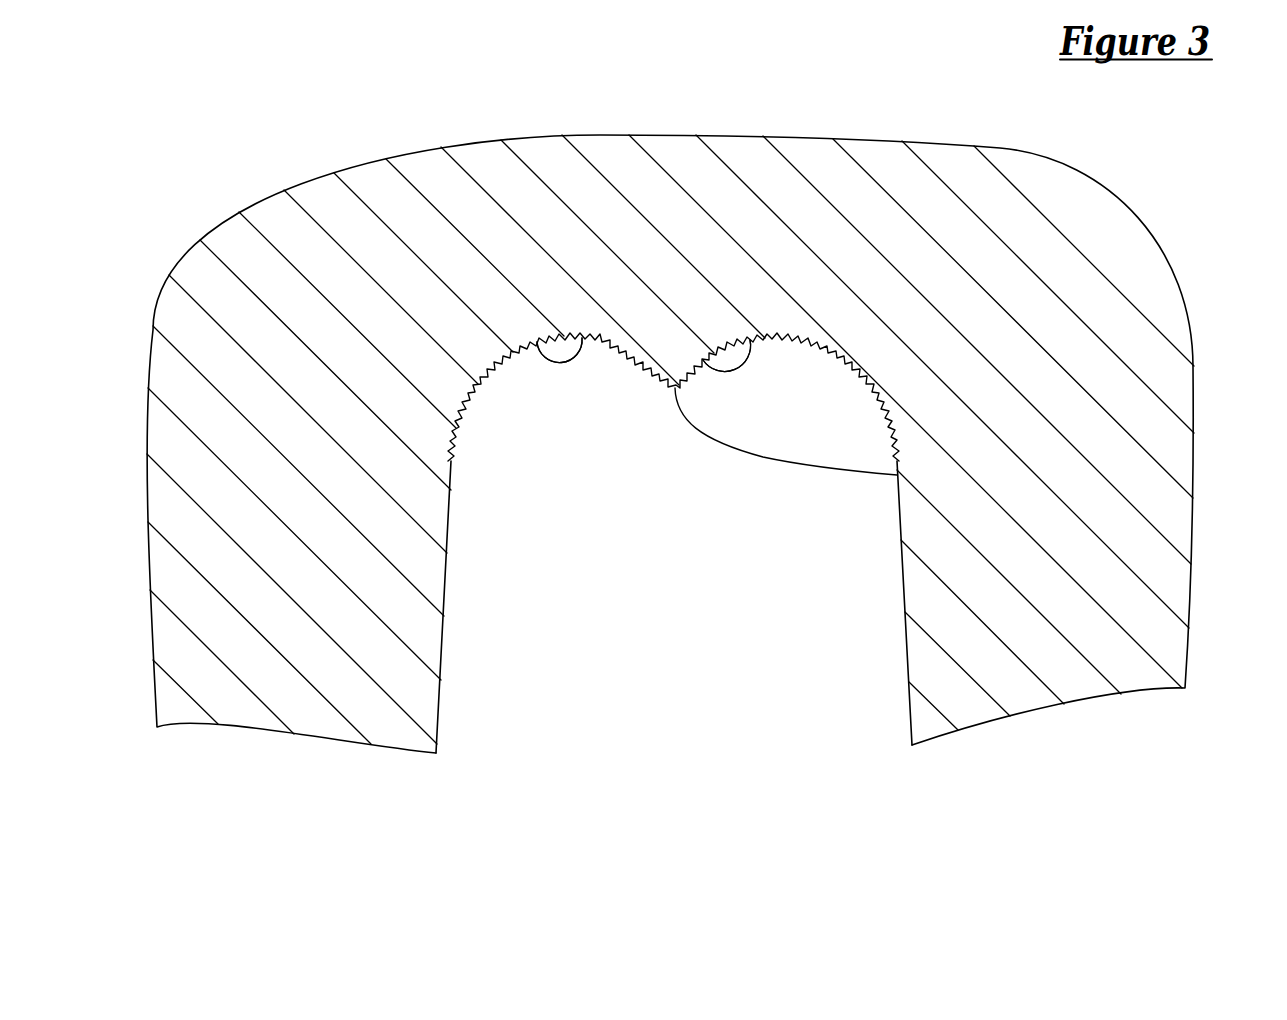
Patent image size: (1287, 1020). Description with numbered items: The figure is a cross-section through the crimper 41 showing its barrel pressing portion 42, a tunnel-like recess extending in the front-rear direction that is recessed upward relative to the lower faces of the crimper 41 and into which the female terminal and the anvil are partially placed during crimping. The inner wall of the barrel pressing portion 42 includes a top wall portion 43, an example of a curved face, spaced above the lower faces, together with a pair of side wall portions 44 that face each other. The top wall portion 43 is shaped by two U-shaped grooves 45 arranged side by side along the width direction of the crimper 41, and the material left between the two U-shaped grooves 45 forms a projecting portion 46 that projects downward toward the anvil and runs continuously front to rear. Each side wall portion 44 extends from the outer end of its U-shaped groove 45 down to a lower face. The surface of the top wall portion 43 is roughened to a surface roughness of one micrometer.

The crimper 41 is at (1197, 193).
The barrel pressing portion 42 is at (669, 531).
The top wall portion 43 is at (644, 220).
The side wall portions 44 is at (442, 688).
The U-shaped grooves 45 is at (697, 357).
The projecting portion 46 is at (897, 475).